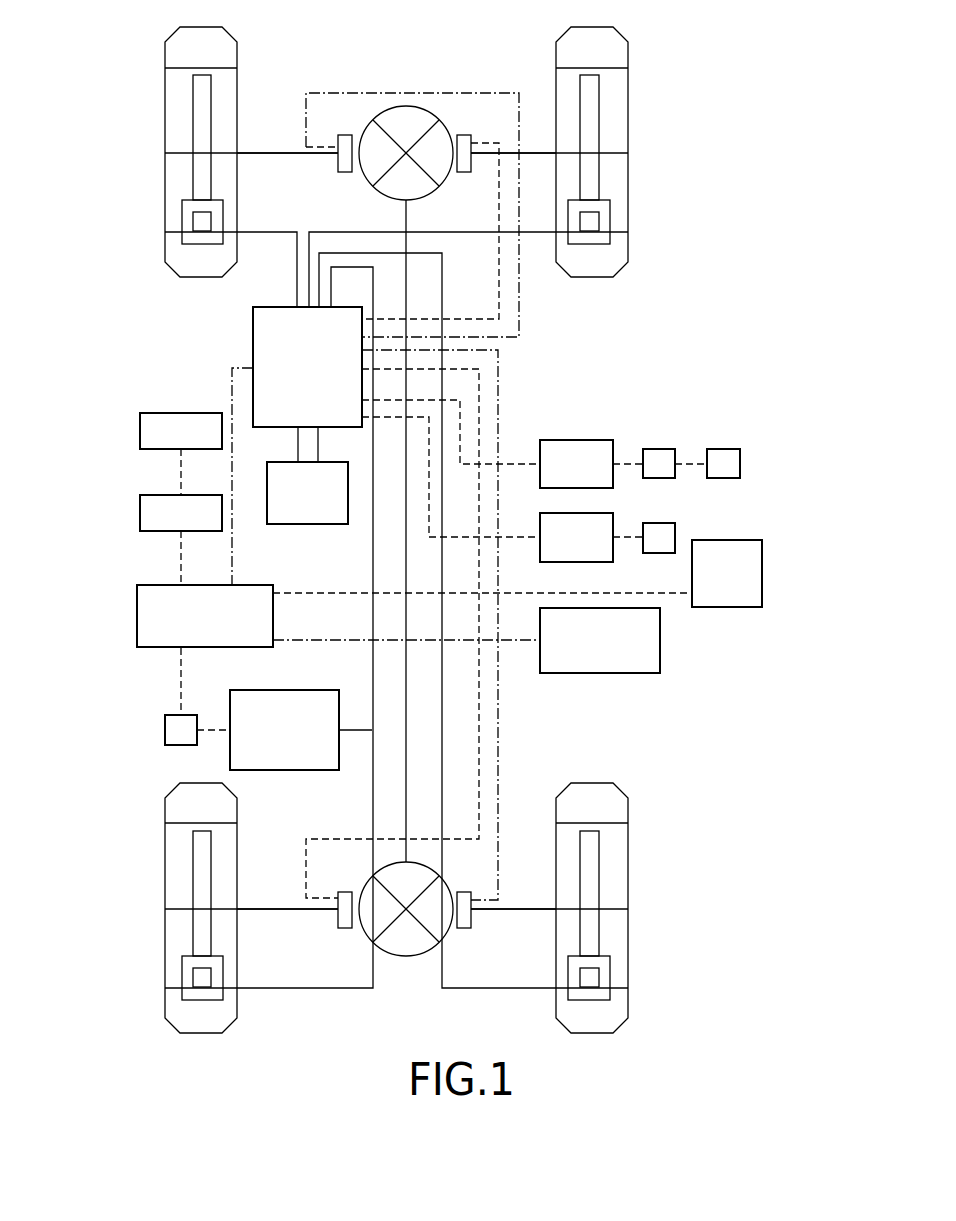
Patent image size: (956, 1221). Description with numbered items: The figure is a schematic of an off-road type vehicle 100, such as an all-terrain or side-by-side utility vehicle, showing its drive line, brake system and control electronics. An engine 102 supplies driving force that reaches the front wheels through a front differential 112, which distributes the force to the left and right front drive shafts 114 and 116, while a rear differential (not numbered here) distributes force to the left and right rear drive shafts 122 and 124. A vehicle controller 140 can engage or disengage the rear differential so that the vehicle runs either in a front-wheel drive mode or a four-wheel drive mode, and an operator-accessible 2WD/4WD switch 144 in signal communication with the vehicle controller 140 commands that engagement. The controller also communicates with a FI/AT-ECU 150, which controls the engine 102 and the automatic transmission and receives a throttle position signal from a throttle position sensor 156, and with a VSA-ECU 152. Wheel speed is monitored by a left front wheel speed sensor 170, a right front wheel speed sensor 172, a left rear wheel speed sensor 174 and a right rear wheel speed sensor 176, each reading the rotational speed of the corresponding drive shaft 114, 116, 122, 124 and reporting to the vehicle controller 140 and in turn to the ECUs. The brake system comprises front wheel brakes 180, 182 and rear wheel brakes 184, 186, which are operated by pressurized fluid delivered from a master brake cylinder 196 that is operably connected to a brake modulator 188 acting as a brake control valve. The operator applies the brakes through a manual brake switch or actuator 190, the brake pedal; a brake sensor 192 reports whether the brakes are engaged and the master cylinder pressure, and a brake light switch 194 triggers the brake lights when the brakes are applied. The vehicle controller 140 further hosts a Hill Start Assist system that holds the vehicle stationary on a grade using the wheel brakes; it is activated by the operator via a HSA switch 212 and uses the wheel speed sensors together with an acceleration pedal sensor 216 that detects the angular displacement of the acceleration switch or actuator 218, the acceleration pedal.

The off-road type vehicle 100 is at (720, 148).
The engine 102 is at (300, 770).
The front differential 112 is at (404, 103).
The left front drive shaft 114 is at (265, 150).
The right front drive shaft 116 is at (541, 150).
The left rear drive shaft 122 is at (265, 905).
The right rear drive shaft 124 is at (541, 907).
The vehicle controller 140 is at (137, 615).
The 2WD/4WD switch 144 is at (660, 640).
The FI/AT-ECU 150 is at (140, 513).
The VSA-ECU 152 is at (140, 431).
The throttle position sensor 156 is at (165, 730).
The left front wheel speed sensor 170 is at (344, 172).
The right front wheel speed sensor 172 is at (463, 172).
The left rear wheel speed sensor 174 is at (342, 928).
The right rear wheel speed sensor 176 is at (465, 928).
The front wheel brake 180 is at (182, 244).
The front wheel brake 182 is at (610, 244).
The rear wheel brake 184 is at (182, 1000).
The rear wheel brake 186 is at (610, 1000).
The brake modulator 188 is at (253, 335).
The manual brake switch or actuator 190 is at (577, 440).
The brake sensor 192 is at (660, 449).
The brake light switch 194 is at (722, 449).
The master brake cylinder 196 is at (310, 524).
The HSA switch 212 is at (762, 573).
The acceleration pedal sensor 216 is at (675, 530).
The acceleration switch or actuator 218 is at (613, 515).